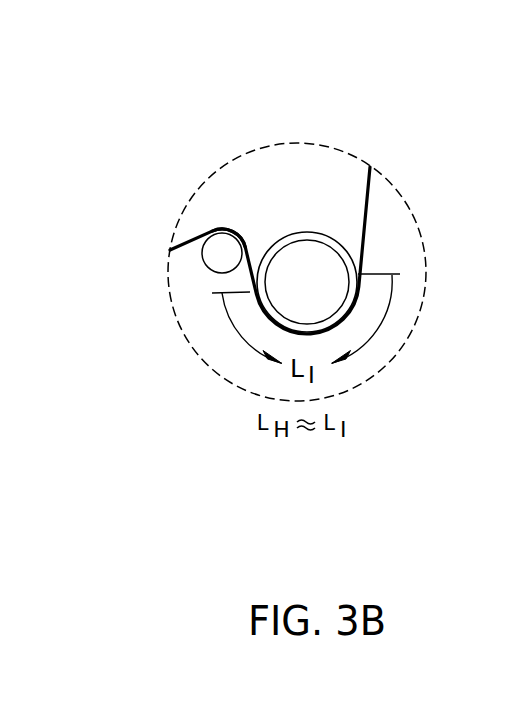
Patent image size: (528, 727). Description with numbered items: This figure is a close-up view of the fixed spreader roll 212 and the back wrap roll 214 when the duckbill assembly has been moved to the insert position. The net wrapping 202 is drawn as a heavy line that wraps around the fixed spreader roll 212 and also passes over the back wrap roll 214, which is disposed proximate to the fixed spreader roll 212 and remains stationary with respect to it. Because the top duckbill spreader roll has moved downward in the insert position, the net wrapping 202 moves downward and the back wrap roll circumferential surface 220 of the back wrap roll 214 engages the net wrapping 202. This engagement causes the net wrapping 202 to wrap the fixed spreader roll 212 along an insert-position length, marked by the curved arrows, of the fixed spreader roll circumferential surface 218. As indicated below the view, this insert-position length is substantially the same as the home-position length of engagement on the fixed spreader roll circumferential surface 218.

The net wrapping 202 is at (190, 241).
The fixed spreader roll 212 is at (293, 273).
The fixed spreader roll circumferential surface 218 is at (306, 232).
The back wrap roll 214 is at (222, 253).
The back wrap roll circumferential surface 220 is at (202, 260).